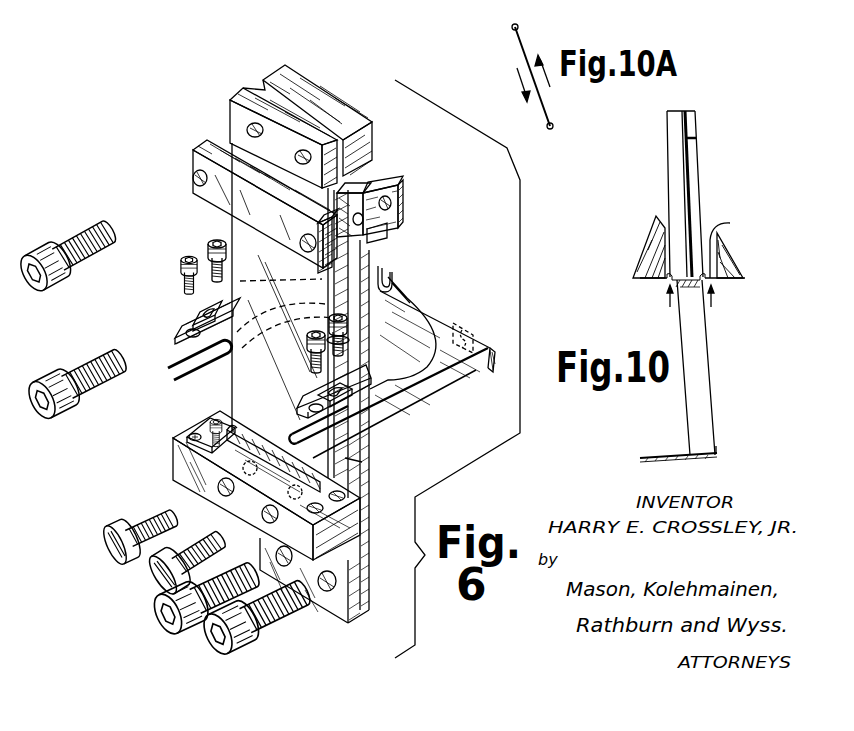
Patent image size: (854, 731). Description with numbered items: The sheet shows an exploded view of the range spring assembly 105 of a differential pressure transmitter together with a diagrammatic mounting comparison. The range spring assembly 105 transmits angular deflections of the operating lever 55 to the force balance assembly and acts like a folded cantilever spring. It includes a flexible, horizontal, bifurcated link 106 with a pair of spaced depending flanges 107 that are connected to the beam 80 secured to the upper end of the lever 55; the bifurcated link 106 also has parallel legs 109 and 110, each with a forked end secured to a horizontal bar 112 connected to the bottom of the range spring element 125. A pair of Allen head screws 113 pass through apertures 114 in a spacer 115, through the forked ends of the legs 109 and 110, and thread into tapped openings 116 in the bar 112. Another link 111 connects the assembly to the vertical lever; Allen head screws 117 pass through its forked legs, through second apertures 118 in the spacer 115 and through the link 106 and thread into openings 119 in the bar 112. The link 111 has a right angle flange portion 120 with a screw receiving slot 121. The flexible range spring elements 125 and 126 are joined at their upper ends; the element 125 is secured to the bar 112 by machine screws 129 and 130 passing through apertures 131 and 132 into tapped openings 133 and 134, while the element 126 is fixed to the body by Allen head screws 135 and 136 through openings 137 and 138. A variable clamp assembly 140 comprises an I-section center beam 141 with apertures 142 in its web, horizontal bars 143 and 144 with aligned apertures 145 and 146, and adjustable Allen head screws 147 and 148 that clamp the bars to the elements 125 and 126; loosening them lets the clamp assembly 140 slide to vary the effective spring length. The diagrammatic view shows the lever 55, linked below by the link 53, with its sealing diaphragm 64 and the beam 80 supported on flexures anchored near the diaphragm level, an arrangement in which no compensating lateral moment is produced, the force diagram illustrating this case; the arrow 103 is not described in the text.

In FIG. 10, the link 53 is at (672, 455).
In FIG. 10, the operating lever 55 is at (697, 208).
In FIG. 10, the sealing diaphragm 64 is at (730, 223).
In FIG. 10, the horizontal beam 80 is at (695, 128).
In FIG. 10, the direction arrow 103 is at (640, 124).
In FIG. 6, the range spring assembly 105 is at (402, 42).
In FIG. 6, the bifurcated link 106 is at (468, 290).
In FIG. 6, the depending flanges 107 is at (490, 356).
In FIG. 6, the leg 109 is at (383, 413).
In FIG. 6, the leg 110 is at (182, 357).
In FIG. 6, the link 111 is at (397, 377).
In FIG. 6, the horizontal bar 112 is at (173, 452).
In FIG. 6, the Allen head screws 113 is at (182, 259).
In FIG. 6, the apertures 114 is at (195, 320).
In FIG. 6, the spacer 115 is at (187, 340).
In FIG. 6, the tapped openings 116 is at (192, 435).
In FIG. 6, the Allen head screws 117 is at (213, 244).
In FIG. 6, the second apertures 118 is at (290, 320).
In FIG. 6, the openings 119 is at (214, 418).
In FIG. 6, the right angle flange portion 120 is at (394, 279).
In FIG. 6, the screw receiving slot 121 is at (379, 268).
In FIG. 6, the range spring element 125 is at (240, 150).
In FIG. 6, the range spring element 126 is at (368, 168).
In FIG. 6, the machine screw 129 is at (117, 525).
In FIG. 6, the machine screw 130 is at (152, 580).
In FIG. 6, the aperture 131 is at (218, 488).
In FIG. 6, the aperture 132 is at (264, 518).
In FIG. 6, the tapped opening 133 is at (273, 432).
In FIG. 6, the tapped opening 134 is at (305, 480).
In FIG. 6, the Allen head screw 135 is at (155, 624).
In FIG. 6, the Allen head screw 136 is at (254, 641).
In FIG. 6, the opening 137 is at (276, 556).
In FIG. 6, the opening 138 is at (336, 582).
In FIG. 6, the variable clamp assembly 140 is at (427, 184).
In FIG. 6, the center beam 141 is at (385, 190).
In FIG. 6, the apertures 142 is at (398, 232).
In FIG. 6, the horizontal bar 143 is at (200, 148).
In FIG. 6, the horizontal bar 144 is at (401, 202).
In FIG. 6, the apertures 145 is at (198, 176).
In FIG. 6, the apertures 146 is at (412, 177).
In FIG. 6, the Allen head screw 147 is at (52, 250).
In FIG. 6, the Allen head screw 148 is at (52, 380).